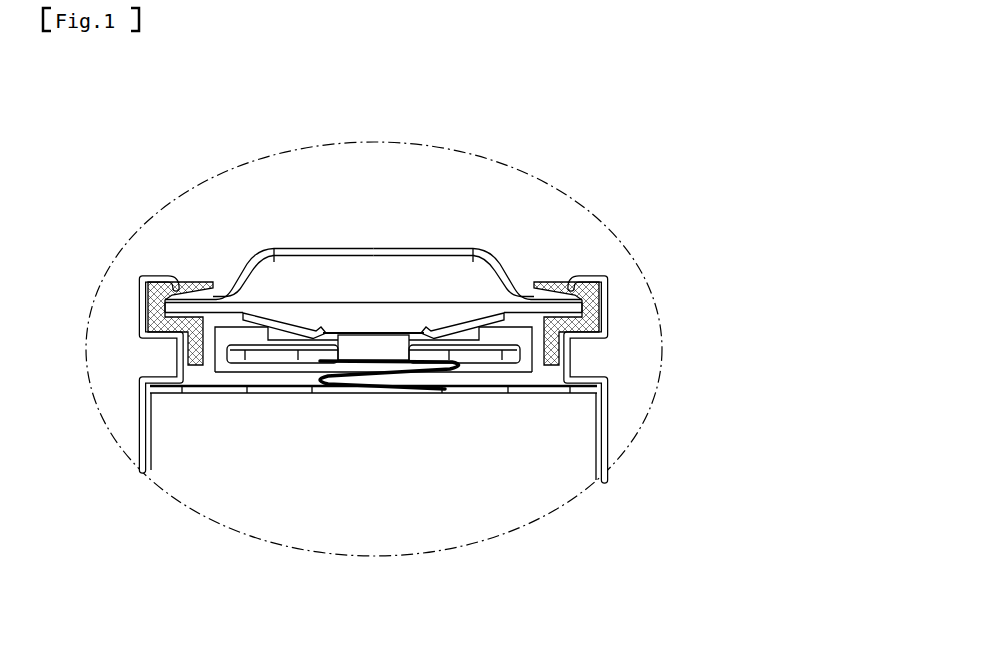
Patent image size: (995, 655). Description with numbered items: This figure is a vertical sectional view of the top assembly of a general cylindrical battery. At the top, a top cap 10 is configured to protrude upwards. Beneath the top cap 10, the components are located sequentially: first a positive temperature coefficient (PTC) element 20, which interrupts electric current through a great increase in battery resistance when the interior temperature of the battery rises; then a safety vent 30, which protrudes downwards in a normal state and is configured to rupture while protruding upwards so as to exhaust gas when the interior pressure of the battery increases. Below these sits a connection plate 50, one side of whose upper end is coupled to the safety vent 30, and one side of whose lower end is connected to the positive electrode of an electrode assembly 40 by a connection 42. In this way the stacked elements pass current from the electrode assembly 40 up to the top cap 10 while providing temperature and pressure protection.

The top cap 10 is at (380, 243).
The positive temperature coefficient (PTC) element 20 is at (467, 300).
The safety vent 30 is at (268, 252).
The electrode assembly 40 is at (553, 460).
The connection 42 is at (370, 376).
The connection plate 50 is at (308, 353).